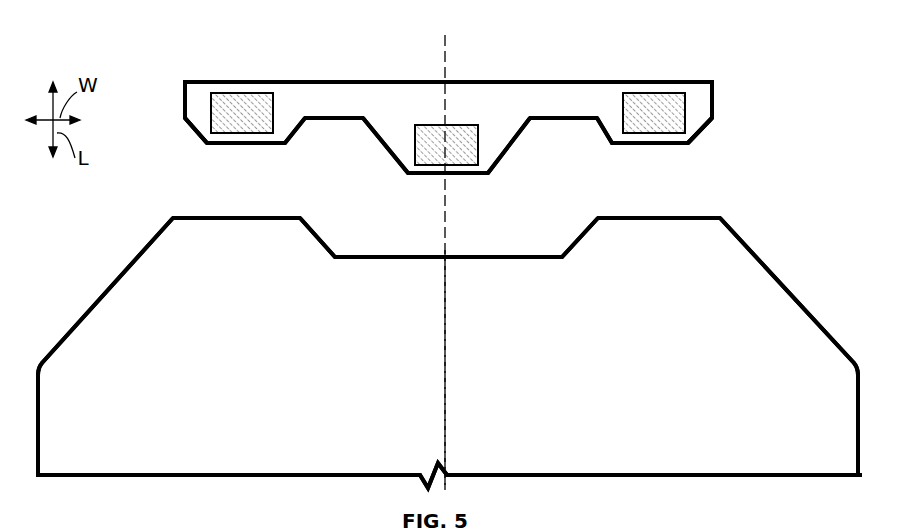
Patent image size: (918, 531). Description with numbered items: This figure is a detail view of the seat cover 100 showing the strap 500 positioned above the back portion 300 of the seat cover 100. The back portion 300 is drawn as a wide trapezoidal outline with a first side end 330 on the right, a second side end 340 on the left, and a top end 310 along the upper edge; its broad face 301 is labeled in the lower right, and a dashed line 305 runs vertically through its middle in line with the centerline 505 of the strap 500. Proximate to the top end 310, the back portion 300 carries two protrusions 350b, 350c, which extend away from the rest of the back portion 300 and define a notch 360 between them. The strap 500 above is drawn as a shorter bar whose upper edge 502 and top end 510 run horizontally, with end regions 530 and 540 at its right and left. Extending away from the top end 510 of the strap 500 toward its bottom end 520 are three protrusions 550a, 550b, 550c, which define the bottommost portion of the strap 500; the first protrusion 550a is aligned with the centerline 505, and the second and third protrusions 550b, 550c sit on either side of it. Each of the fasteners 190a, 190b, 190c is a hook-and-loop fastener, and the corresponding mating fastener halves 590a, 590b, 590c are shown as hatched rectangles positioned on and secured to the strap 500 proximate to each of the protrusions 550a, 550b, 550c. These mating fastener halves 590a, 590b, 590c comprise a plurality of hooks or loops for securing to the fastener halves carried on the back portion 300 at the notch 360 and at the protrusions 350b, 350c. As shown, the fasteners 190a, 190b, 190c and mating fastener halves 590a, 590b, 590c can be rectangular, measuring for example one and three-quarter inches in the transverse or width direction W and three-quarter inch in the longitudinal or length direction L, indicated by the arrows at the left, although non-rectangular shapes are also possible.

The seat cover 100 is at (449, 374).
The fastener 190a is at (536, 84).
The fastener 190b is at (752, 92).
The fastener 190c is at (180, 82).
The back portion 300 is at (800, 292).
The bottom surface 301 is at (690, 391).
The central axis of cross member 305 is at (445, 409).
The top end 310 is at (731, 212).
The first side end 330 is at (840, 453).
The second side end 340 is at (63, 448).
The protrusion 350b is at (690, 243).
The protrusion 350c is at (228, 240).
The notch 360 is at (475, 257).
The strap 500 is at (613, 70).
The top plate 502 is at (367, 98).
The centerline 505 is at (447, 65).
The top end 510 is at (395, 98).
The bottom end 520 is at (431, 175).
The right end 530 is at (700, 105).
The left end 540 is at (197, 105).
The first protrusion 550a is at (398, 150).
The second protrusion 550b is at (637, 143).
The third protrusion 550c is at (200, 123).
The mating fastener half 590a is at (460, 122).
The mating fastener half 590b is at (690, 88).
The mating fastener half 590c is at (223, 92).